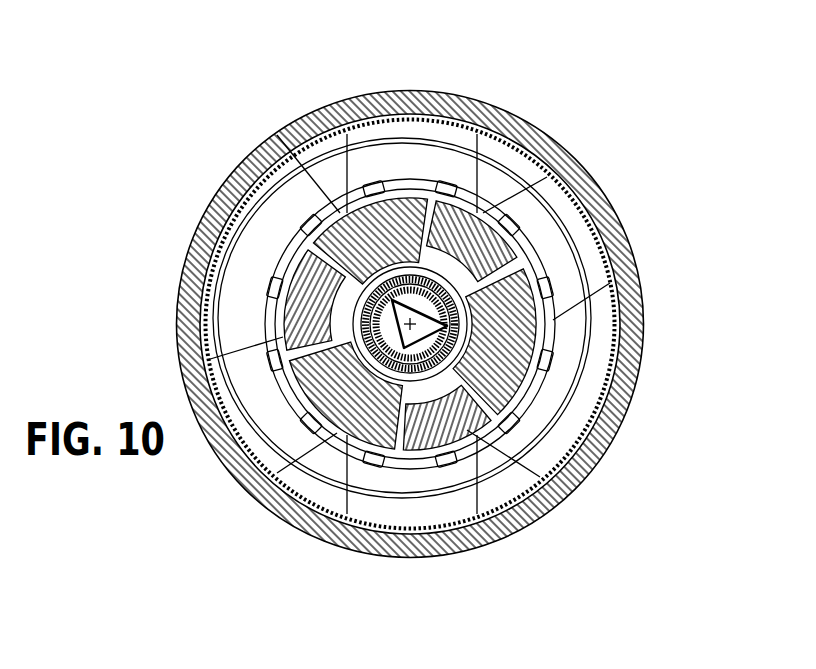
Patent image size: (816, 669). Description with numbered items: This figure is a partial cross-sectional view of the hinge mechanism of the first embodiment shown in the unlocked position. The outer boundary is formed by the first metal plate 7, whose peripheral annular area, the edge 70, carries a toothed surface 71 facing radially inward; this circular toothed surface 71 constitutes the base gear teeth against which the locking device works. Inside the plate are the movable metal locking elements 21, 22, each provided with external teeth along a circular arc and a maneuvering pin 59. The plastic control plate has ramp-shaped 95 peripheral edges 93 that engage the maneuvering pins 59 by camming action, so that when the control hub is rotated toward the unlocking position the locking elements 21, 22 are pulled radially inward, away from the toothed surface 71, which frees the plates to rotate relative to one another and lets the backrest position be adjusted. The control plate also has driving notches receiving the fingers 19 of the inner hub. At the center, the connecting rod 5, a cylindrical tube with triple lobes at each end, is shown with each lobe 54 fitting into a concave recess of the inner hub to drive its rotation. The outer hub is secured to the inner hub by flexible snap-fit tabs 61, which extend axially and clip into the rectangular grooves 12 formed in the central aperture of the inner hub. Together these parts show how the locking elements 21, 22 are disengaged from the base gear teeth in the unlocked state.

The first metal plate 7 is at (508, 97).
The edge 70 is at (632, 305).
The toothed surface 71 is at (613, 333).
The connecting rod 5 is at (482, 440).
The locking element 22 is at (265, 240).
The locking element 21 is at (430, 155).
The maneuvering pin 59 is at (375, 193).
The peripheral edge 93 is at (343, 198).
The ramp shape 95 is at (503, 217).
The lobe 54 is at (533, 387).
The driving finger 19 is at (395, 365).
The rectangular groove 12 is at (398, 372).
The flexible snap-fit tab 61 is at (409, 378).